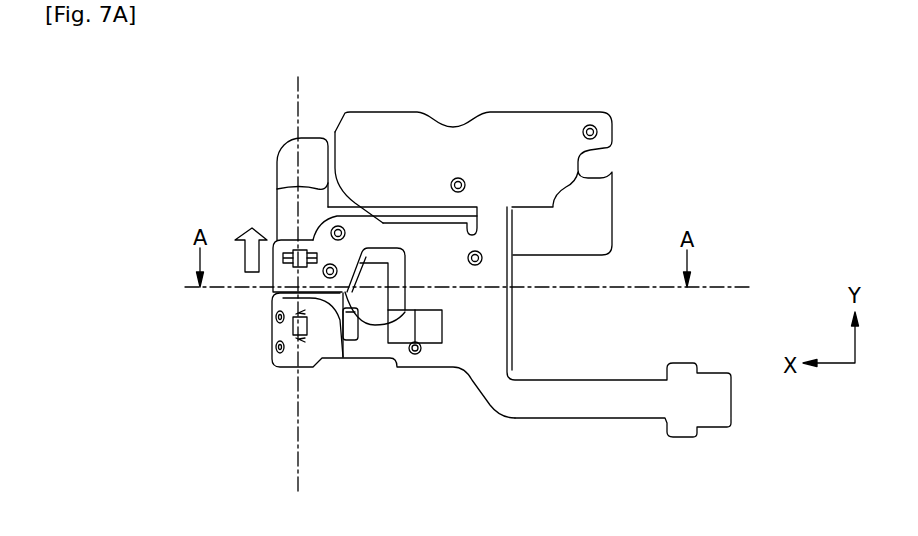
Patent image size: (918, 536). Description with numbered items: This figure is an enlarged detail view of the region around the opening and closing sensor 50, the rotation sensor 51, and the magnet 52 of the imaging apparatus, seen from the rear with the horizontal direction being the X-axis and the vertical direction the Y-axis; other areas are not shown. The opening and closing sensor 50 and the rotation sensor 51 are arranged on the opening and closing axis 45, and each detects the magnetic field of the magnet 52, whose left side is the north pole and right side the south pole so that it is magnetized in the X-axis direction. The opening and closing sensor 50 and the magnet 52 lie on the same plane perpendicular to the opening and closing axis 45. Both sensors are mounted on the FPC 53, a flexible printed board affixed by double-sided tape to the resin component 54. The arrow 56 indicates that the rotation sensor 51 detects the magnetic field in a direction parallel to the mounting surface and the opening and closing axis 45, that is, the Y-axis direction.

The opening and closing axis 45 is at (298, 417).
The opening and closing sensor 50 is at (292, 328).
The rotation sensor 51 is at (296, 250).
The magnet 52 is at (432, 320).
The FPC (flexible printed board) 53 is at (465, 244).
The resin component 54 is at (289, 197).
The arrow 56 is at (250, 229).